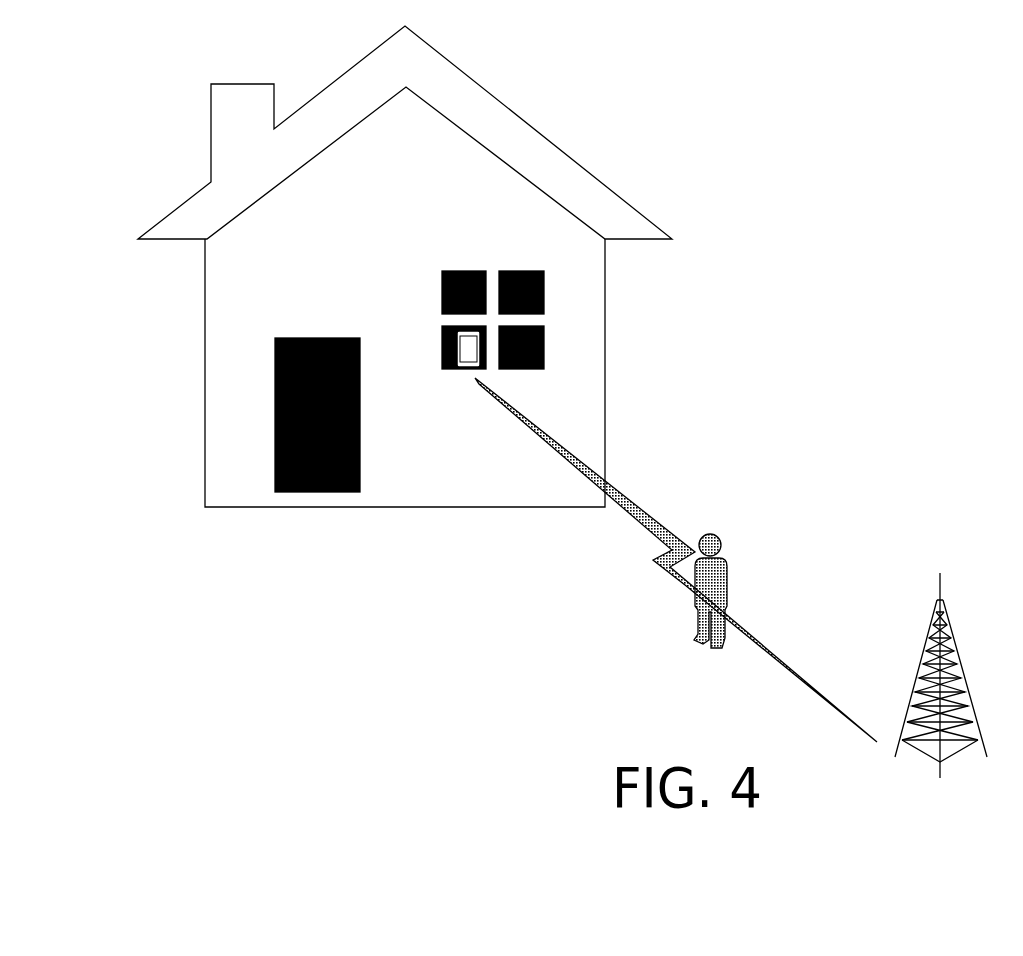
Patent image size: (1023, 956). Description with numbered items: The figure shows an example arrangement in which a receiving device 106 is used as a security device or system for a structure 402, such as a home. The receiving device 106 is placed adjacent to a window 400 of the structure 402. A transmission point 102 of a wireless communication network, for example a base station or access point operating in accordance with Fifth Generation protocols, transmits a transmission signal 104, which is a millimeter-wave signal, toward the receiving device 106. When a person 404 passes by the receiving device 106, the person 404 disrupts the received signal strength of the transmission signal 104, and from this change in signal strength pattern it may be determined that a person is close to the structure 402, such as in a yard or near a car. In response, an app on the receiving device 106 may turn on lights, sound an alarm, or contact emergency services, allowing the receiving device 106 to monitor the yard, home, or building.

The transmission point 102 is at (939, 702).
The transmission signal 104 is at (732, 517).
The receiving device 106 is at (459, 368).
The window 400 is at (487, 370).
The structure 402 is at (243, 507).
The person 404 is at (730, 568).